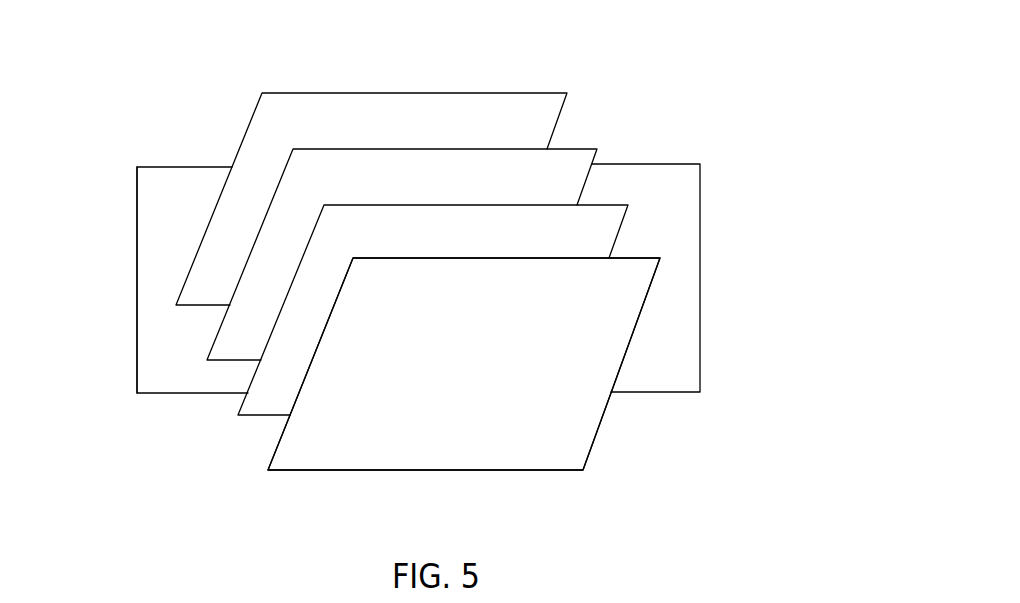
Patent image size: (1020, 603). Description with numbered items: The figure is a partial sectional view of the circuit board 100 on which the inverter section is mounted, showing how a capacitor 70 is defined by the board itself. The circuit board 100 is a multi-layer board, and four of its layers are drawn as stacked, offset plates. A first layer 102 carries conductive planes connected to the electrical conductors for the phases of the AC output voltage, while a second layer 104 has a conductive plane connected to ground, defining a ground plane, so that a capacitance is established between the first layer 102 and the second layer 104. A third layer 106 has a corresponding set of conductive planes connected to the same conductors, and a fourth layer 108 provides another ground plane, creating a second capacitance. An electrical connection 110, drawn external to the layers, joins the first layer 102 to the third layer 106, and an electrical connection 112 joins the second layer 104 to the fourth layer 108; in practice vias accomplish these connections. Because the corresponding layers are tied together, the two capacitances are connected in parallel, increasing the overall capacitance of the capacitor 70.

The capacitor 70 is at (145, 53).
The circuit board 100 is at (585, 484).
The first layer 102 is at (556, 118).
The second layer 104 is at (595, 159).
The third layer 106 is at (265, 418).
The fourth layer 108 is at (292, 472).
The electrical connection 110 is at (137, 250).
The electrical connection 112 is at (700, 368).